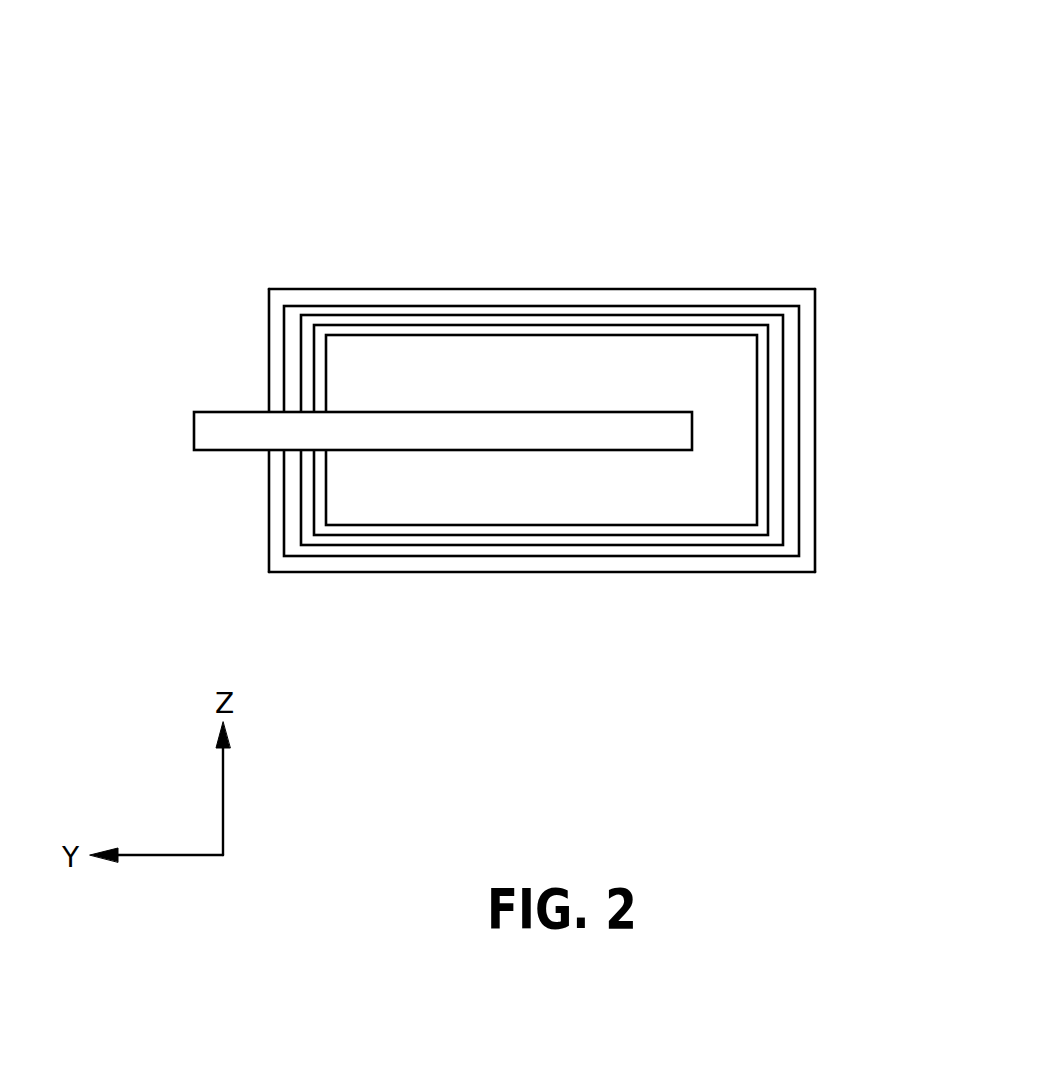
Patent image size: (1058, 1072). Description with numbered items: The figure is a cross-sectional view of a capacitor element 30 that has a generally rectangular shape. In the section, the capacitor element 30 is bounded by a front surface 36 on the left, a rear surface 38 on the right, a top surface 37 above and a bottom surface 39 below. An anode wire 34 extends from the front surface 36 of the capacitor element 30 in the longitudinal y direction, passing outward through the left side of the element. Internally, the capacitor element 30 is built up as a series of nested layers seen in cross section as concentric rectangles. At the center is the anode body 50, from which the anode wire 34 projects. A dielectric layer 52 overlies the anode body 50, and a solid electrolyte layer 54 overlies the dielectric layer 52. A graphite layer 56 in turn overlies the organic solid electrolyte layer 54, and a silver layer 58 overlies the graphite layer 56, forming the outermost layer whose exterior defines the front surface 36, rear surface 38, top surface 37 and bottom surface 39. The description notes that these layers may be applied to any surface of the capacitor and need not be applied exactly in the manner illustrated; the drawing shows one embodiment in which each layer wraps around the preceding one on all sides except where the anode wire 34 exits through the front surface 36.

The capacitor element 30 is at (470, 116).
The anode wire 34 is at (549, 426).
The front surface 36 is at (268, 493).
The top surface 37 is at (572, 289).
The rear surface 38 is at (817, 427).
The bottom surface 39 is at (558, 572).
The anode body 50 is at (669, 365).
The dielectric layer 52 is at (765, 340).
The solid electrolyte layer 54 is at (776, 377).
The graphite layer 56 is at (792, 493).
The silver layer 58 is at (575, 421).